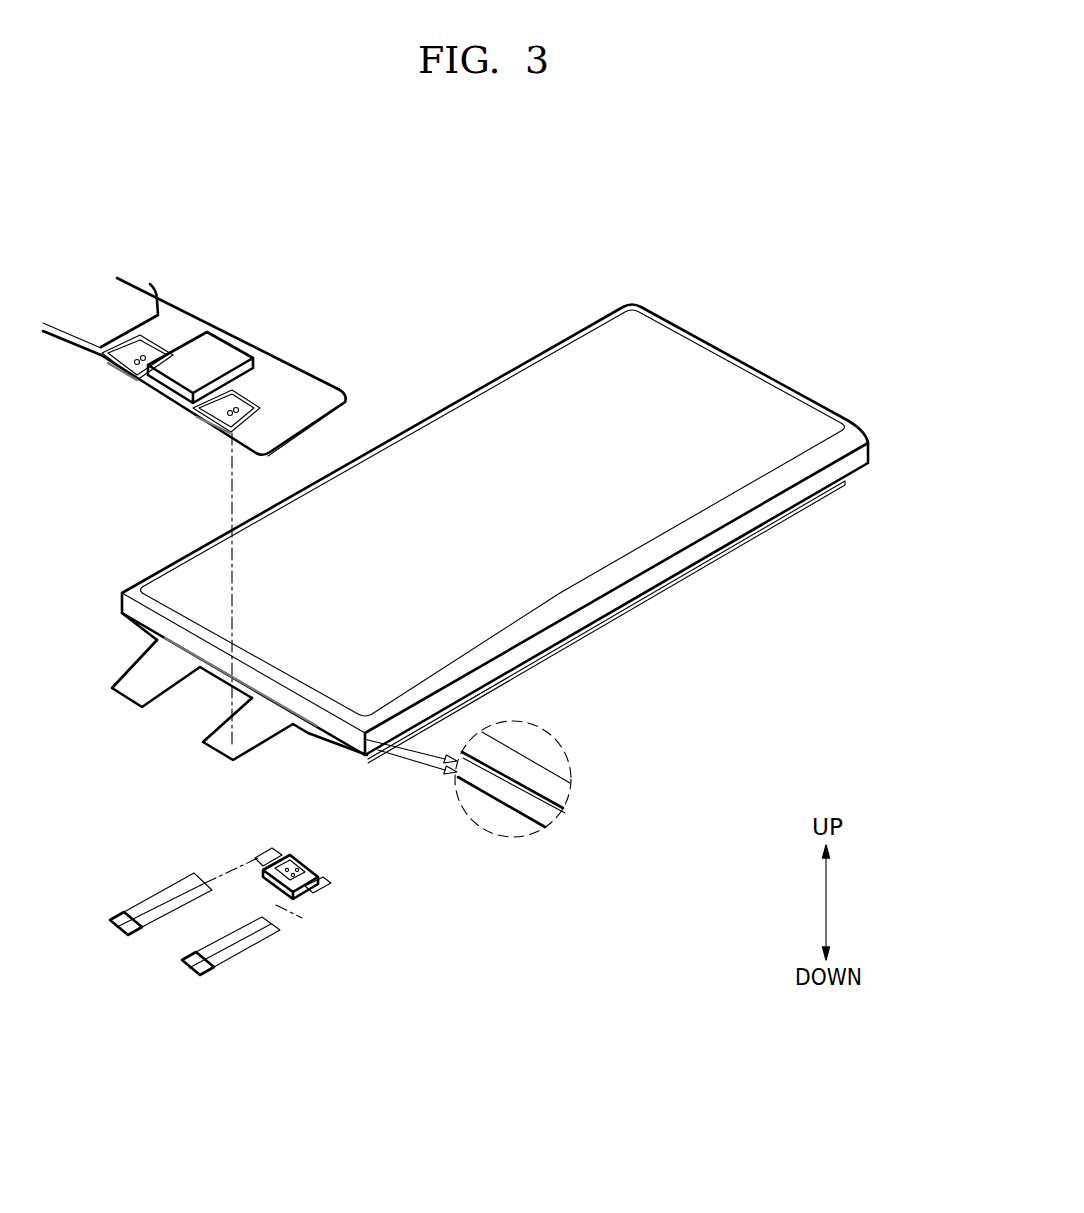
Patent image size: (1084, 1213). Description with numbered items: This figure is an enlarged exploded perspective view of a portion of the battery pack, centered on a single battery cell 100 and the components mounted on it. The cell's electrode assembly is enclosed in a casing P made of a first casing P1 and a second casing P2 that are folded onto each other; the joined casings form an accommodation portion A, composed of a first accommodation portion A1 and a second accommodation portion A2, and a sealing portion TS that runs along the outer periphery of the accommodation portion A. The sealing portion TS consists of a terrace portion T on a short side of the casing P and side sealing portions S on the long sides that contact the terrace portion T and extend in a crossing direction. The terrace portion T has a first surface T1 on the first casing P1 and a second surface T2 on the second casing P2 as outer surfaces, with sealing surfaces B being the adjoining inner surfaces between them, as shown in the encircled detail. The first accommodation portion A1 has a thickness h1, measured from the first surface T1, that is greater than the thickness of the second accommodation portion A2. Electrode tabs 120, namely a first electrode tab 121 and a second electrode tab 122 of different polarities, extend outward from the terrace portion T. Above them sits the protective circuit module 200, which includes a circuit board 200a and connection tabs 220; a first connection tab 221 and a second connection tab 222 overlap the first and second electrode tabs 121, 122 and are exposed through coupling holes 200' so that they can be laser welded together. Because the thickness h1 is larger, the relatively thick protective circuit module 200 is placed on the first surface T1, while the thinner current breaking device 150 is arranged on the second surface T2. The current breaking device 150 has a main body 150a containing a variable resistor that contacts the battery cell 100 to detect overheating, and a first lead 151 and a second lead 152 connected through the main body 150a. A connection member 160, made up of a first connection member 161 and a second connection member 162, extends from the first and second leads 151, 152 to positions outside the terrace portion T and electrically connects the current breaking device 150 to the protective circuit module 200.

The battery cell 100 is at (696, 270).
The electrode tabs 120 is at (212, 720).
The first electrode tab 121 is at (225, 754).
The second electrode tab 122 is at (132, 695).
The current breaking device 150 is at (304, 871).
The main body 150a is at (300, 883).
The first lead 151 is at (323, 880).
The second lead 152 is at (270, 850).
The connection member 160 is at (171, 959).
The first connection member 161 is at (206, 970).
The second connection member 162 is at (117, 930).
The protective circuit module 200 is at (216, 339).
The coupling holes 200' is at (258, 356).
The circuit board 200a is at (313, 387).
The connection tabs 220 is at (140, 419).
The first connection tab 221 is at (212, 422).
The second connection tab 222 is at (126, 372).
The accommodation portion A is at (945, 448).
The first accommodation portion A1 is at (820, 425).
The second accommodation portion A2 is at (842, 486).
The casing P is at (755, 641).
The first casing P1 is at (640, 517).
The second casing P2 is at (727, 552).
The terrace portion T is at (333, 723).
The sealing portion TS is at (377, 597).
The side sealing portions S is at (438, 702).
The sealing surfaces B is at (533, 790).
The first surface T1 is at (522, 753).
The second surface T2 is at (515, 817).
The thickness h1 is at (122, 601).